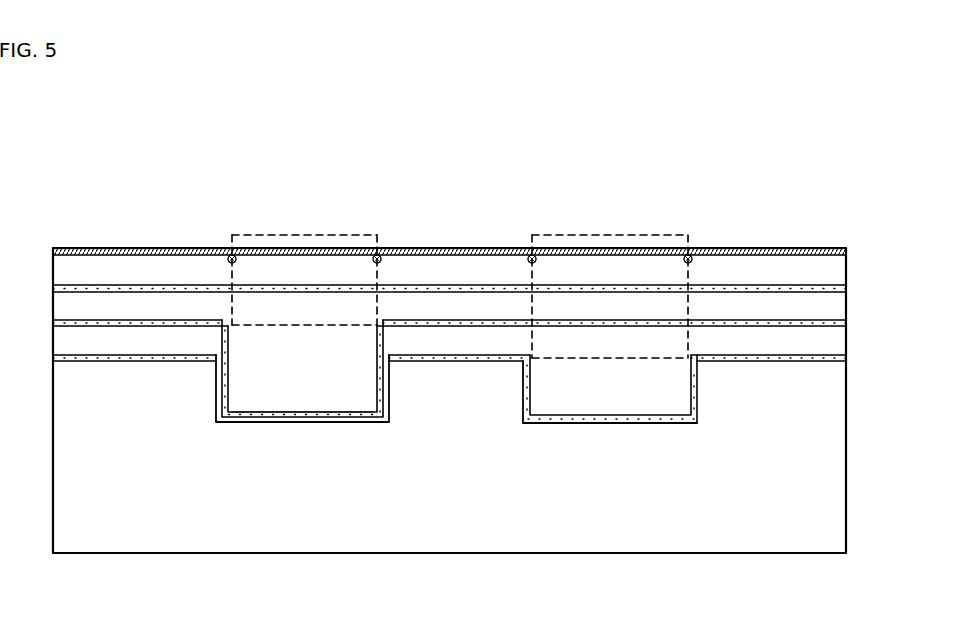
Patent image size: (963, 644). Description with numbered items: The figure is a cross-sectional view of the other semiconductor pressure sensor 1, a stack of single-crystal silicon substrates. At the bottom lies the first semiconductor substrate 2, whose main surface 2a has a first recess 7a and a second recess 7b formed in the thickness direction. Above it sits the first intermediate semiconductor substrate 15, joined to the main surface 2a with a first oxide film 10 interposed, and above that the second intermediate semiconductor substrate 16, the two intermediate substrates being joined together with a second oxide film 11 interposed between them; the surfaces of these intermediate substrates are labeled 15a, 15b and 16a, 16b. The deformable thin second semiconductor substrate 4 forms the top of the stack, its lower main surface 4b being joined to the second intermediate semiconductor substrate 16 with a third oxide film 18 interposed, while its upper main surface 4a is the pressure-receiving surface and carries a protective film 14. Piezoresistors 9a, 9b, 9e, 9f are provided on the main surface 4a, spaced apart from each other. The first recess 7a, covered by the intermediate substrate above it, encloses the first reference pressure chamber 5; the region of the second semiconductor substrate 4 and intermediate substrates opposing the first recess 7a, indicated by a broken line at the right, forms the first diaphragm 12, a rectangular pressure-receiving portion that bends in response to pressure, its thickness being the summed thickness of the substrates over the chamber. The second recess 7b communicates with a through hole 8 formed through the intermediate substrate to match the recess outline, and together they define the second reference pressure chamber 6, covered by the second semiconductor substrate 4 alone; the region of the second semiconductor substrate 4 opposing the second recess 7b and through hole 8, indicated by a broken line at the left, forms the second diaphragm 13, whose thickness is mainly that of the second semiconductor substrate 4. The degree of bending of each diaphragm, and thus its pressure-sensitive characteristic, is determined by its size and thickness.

The semiconductor pressure sensor 1 is at (733, 173).
The first semiconductor substrate 2 is at (816, 456).
The main surface of the first semiconductor substrate 2a is at (818, 362).
The second semiconductor substrate 4 is at (833, 272).
The main surface of the second semiconductor substrate 4a is at (75, 256).
The main surface of the second semiconductor substrate 4b is at (99, 260).
The first reference pressure chamber 5 is at (622, 382).
The second reference pressure chamber 6 is at (343, 378).
The first recess 7a is at (697, 385).
The second recess 7b is at (390, 394).
The through hole 8 is at (222, 343).
The piezoresistor 9a is at (532, 247).
The piezoresistor 9b is at (687, 247).
The piezoresistor 9e is at (233, 247).
The piezoresistor 9f is at (376, 247).
The first oxide film 10 is at (792, 355).
The second oxide film 11 is at (758, 327).
The first diaphragm 12 is at (570, 359).
The second diaphragm 13 is at (280, 326).
The protective film 14 is at (835, 247).
The first intermediate semiconductor substrate 15 is at (828, 341).
The lower surface of first interlayer insulating film 15a is at (66, 328).
The upper surface of first interlayer insulating film 15b is at (162, 353).
The second intermediate semiconductor substrate 16 is at (828, 310).
The lower surface of second interlayer insulating film 16a is at (72, 292).
The upper surface of second interlayer insulating film 16b is at (132, 320).
The third oxide film 18 is at (730, 291).